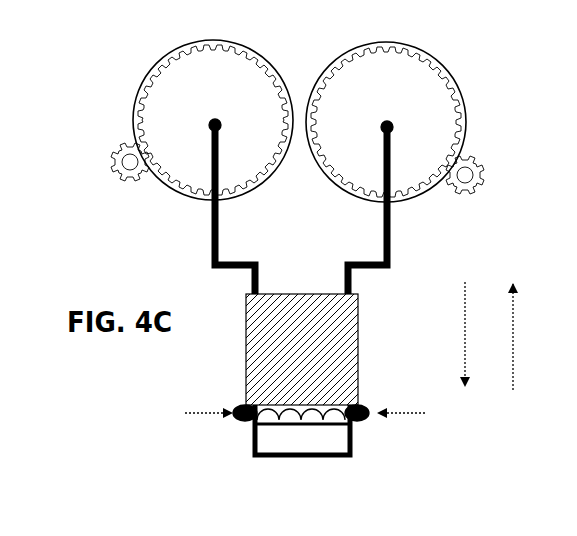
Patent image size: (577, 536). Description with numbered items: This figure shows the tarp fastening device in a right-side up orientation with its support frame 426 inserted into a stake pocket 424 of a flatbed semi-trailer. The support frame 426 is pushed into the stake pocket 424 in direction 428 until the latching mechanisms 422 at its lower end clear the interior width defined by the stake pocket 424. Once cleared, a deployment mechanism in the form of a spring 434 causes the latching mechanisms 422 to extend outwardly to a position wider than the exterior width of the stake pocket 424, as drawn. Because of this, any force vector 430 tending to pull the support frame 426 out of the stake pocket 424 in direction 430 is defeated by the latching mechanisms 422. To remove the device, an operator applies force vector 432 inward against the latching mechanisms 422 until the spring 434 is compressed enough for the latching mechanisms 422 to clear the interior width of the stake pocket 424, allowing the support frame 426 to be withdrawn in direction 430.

The latching mechanisms 422 is at (245, 420).
The stake pocket 424 is at (358, 343).
The support frame 426 is at (353, 281).
The direction 428 is at (465, 303).
The force vector 430 is at (513, 373).
The force vector 432 is at (210, 415).
The spring 434 is at (318, 408).